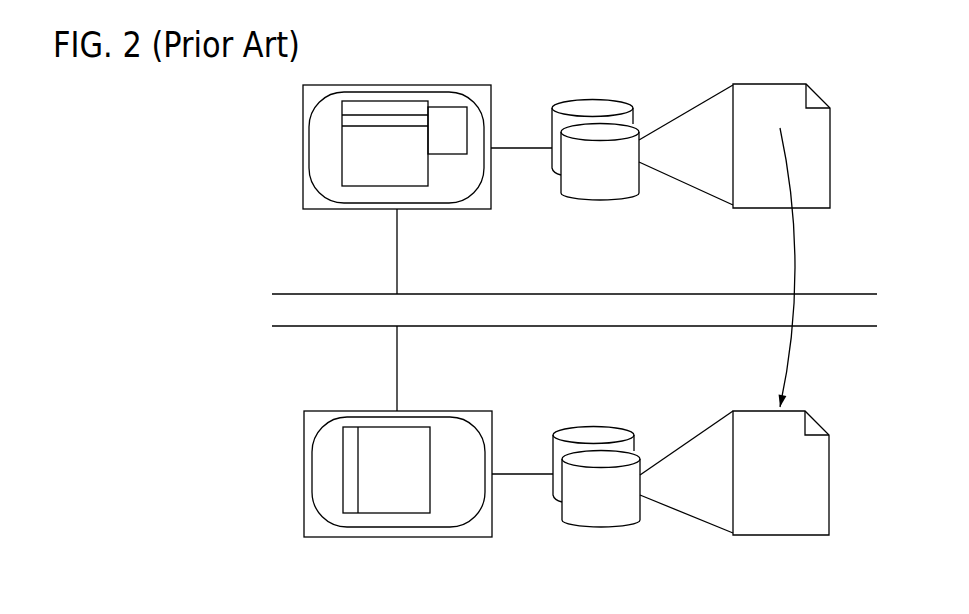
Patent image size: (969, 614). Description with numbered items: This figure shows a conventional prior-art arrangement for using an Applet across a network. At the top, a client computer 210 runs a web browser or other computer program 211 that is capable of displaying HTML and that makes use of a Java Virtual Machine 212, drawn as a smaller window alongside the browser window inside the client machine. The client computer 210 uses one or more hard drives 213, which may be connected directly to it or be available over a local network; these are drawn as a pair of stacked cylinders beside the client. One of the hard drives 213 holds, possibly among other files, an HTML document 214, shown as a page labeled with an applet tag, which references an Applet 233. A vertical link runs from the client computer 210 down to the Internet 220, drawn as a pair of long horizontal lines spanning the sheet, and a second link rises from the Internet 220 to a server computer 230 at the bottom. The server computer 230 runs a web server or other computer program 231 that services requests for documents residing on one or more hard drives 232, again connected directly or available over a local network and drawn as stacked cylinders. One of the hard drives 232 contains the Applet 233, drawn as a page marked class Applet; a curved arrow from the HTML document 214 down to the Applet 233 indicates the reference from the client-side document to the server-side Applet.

The client computer 210 is at (371, 123).
The web browser or other computer program 211 is at (365, 100).
The Java Virtual Machine 212 is at (452, 107).
The hard drives 213 is at (590, 98).
The HTML document 214 is at (830, 148).
The Internet 220 is at (270, 308).
The server computer 230 is at (362, 495).
The web server or other computer program 231 is at (388, 513).
The hard drives 232 is at (592, 422).
The Applet 233 is at (829, 475).